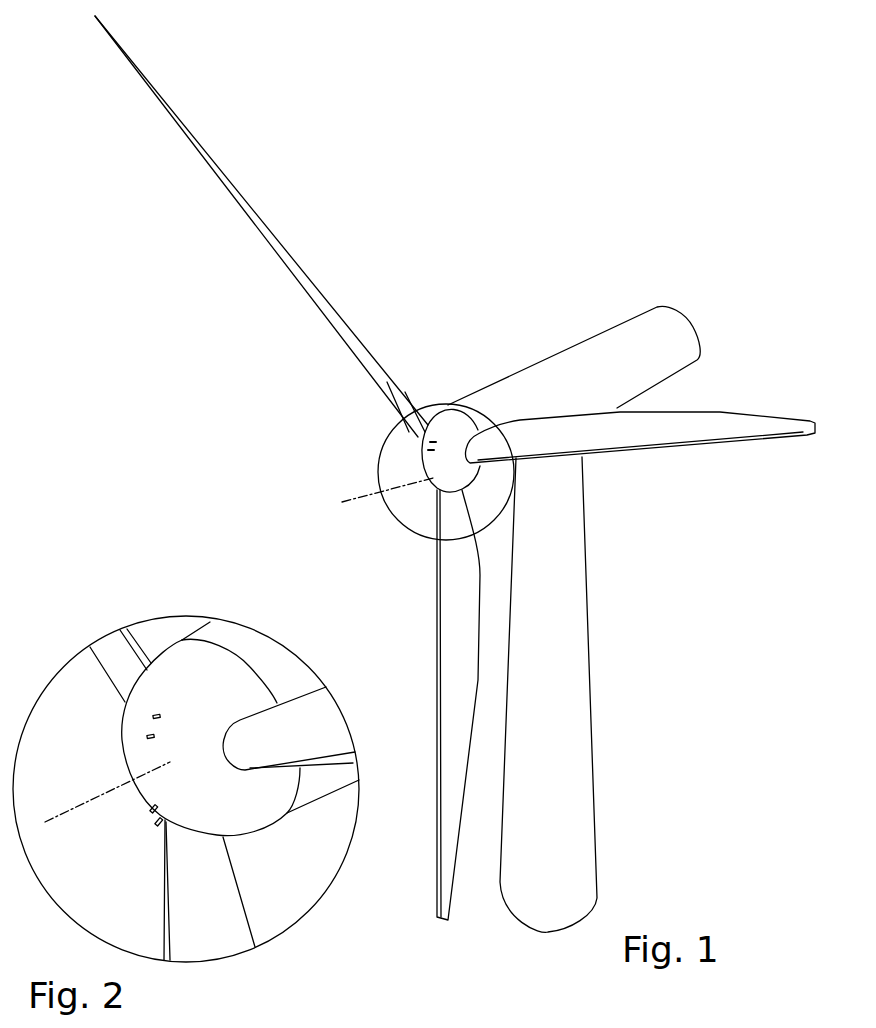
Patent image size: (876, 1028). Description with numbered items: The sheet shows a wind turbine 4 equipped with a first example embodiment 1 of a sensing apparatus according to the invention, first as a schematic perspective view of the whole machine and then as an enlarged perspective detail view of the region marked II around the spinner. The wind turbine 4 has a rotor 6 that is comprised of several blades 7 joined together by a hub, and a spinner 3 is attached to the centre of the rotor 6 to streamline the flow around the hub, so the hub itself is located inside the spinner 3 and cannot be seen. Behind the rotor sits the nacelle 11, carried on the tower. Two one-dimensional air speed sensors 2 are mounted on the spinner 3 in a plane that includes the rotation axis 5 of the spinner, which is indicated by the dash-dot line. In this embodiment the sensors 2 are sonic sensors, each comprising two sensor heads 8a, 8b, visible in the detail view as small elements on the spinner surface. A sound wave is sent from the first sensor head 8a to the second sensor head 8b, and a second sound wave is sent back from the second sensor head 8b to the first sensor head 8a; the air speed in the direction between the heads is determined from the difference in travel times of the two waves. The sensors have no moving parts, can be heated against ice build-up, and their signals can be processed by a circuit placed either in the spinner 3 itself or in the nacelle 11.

In FIG. 1, the first example embodiment 1 is at (277, 373).
In FIG. 2, the first example embodiment 1 is at (60, 623).
In FIG. 1, the one-dimensional air speed sensor 2 is at (423, 443).
In FIG. 2, the one-dimensional air speed sensor 2 is at (148, 771).
In FIG. 1, the spinner 3 is at (447, 420).
In FIG. 2, the spinner 3 is at (250, 692).
In FIG. 1, the wind turbine 4 is at (652, 562).
In FIG. 1, the rotation axis 5 is at (336, 503).
In FIG. 2, the rotation axis 5 is at (45, 822).
In FIG. 1, the rotor 6 is at (481, 501).
In FIG. 2, the rotor 6 is at (273, 848).
In FIG. 1, the blade 7 is at (301, 267).
In FIG. 2, the blade 7 is at (117, 635).
In FIG. 2, the first sensor head 8a is at (162, 715).
In FIG. 2, the second sensor head 8b is at (158, 737).
In FIG. 1, the nacelle 11 is at (597, 330).
In FIG. 1, the detail view marker II is at (382, 443).